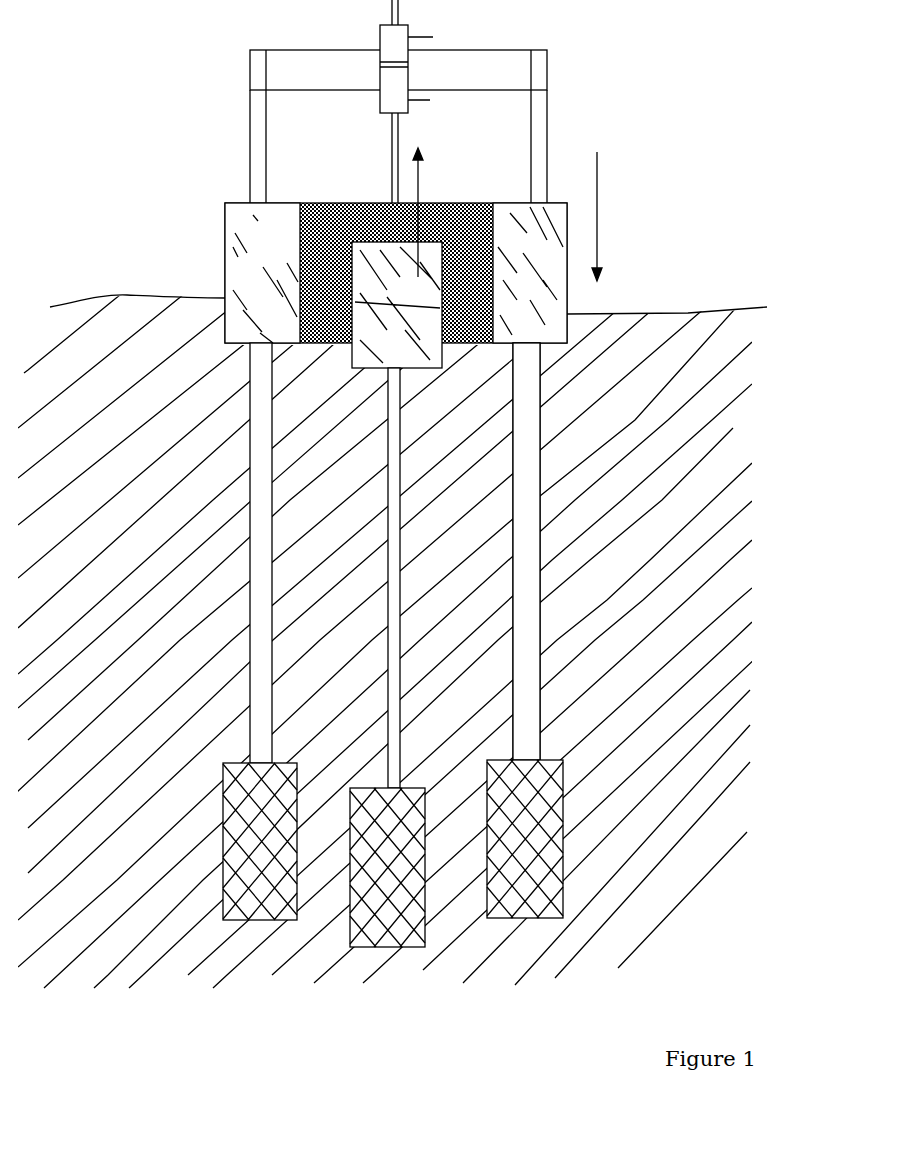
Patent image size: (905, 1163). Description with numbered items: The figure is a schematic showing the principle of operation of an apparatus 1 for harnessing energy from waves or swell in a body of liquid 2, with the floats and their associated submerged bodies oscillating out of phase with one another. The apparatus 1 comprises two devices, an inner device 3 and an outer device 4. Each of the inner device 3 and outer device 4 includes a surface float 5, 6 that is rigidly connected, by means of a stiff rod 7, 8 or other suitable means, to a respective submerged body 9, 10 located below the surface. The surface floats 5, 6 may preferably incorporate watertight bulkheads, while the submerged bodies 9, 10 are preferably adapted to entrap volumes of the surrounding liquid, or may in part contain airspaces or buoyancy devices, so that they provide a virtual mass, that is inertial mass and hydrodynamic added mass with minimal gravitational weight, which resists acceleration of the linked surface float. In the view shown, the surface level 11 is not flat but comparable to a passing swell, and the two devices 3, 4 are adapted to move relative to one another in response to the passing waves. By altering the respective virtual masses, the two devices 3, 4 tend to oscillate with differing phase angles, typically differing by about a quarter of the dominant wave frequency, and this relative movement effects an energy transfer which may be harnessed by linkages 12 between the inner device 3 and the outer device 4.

The apparatus 1 is at (163, 87).
The body of liquid 2 is at (660, 493).
The inner device 3 is at (442, 180).
The outer device 4 is at (223, 220).
The surface float 5 is at (450, 223).
The surface float 6 is at (223, 237).
The stiff rod 7 is at (540, 425).
The stiff rod 8 is at (540, 374).
The submerged body 9 is at (423, 790).
The submerged body 10 is at (563, 817).
The surface level 11 is at (688, 313).
The linkages 12 is at (450, 31).